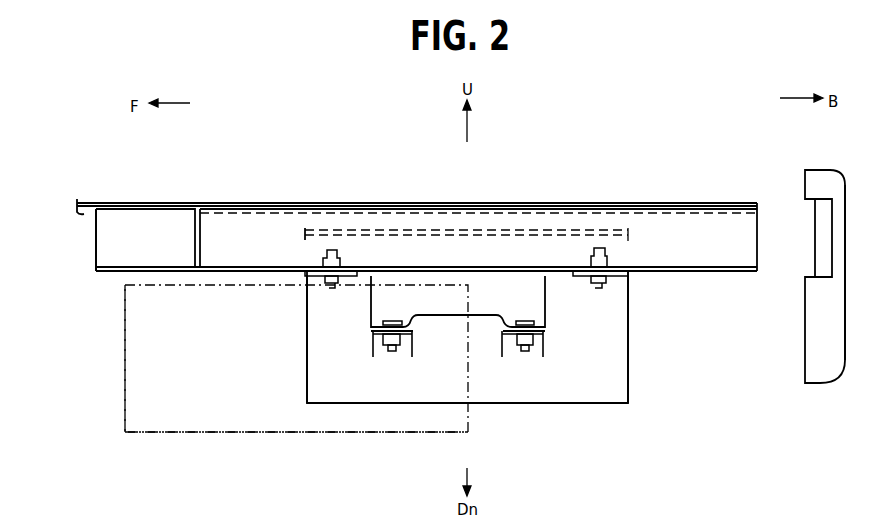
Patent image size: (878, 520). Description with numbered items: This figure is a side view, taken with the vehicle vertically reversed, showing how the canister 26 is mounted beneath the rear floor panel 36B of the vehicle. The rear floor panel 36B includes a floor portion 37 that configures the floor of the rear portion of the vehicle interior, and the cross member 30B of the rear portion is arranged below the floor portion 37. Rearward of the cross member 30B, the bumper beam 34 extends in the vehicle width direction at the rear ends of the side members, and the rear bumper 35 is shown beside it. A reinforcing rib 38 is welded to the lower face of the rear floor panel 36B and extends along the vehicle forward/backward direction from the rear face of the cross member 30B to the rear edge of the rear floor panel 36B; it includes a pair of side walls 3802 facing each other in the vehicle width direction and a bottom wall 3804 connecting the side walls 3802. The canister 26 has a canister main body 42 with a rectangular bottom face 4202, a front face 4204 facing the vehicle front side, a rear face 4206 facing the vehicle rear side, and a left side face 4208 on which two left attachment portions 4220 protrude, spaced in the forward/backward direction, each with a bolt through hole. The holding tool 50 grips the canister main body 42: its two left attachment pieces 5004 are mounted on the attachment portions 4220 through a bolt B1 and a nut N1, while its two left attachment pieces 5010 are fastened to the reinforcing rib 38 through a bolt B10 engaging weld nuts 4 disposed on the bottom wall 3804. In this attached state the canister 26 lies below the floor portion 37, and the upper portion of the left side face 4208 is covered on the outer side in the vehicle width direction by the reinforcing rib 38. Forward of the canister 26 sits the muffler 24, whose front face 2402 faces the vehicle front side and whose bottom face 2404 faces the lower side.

The weld nut 4 is at (322, 262).
The muffler 24 is at (217, 430).
The front face 2402 is at (123, 362).
The bottom face 2404 is at (262, 432).
The canister 26 is at (485, 219).
The cross member 30B is at (93, 248).
The bumper beam 34 is at (807, 220).
The rear bumper 35 is at (848, 212).
The rear floor panel 36B is at (547, 203).
The floor portion 37 is at (593, 203).
The reinforcing rib 38 is at (737, 272).
The side wall 3802 is at (703, 230).
The bottom wall 3804 is at (665, 260).
The canister main body 42 is at (463, 371).
The bottom face 4202 is at (502, 404).
The front face 4204 is at (307, 337).
The rear face 4206 is at (630, 333).
The left side face 4208 is at (577, 375).
The left attachment portion 4220 is at (380, 357).
The holding tool 50 is at (437, 216).
The left attachment piece 5004 is at (412, 316).
The left attachment piece 5010 is at (338, 287).
The bolt B1 is at (392, 321).
The nut N1 is at (400, 351).
The bolt B10 is at (327, 287).